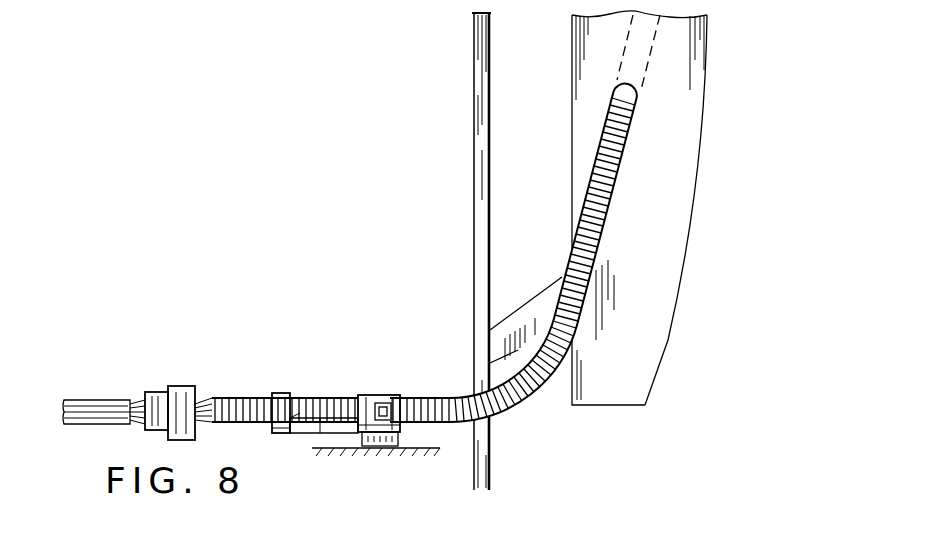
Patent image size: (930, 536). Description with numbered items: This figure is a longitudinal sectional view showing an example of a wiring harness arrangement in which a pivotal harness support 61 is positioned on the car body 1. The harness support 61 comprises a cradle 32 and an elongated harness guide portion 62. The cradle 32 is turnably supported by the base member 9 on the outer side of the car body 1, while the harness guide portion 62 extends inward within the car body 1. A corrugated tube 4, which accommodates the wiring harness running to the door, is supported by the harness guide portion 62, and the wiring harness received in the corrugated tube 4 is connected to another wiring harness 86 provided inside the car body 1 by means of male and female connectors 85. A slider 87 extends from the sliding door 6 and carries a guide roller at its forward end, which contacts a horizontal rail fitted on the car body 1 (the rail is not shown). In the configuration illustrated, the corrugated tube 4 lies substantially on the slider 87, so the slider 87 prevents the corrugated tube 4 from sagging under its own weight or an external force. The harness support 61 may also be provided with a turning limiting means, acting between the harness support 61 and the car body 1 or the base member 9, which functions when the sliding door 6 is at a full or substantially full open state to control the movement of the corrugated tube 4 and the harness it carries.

The car body 1 is at (490, 116).
The corrugated tube 4 is at (515, 396).
The sliding door 6 is at (683, 158).
The base member 9 is at (400, 441).
The cradle 32 is at (388, 395).
The harness support 61 is at (365, 394).
The harness guide portion 62 is at (328, 437).
The male and female connectors 85 is at (185, 390).
The wiring harness 86 is at (100, 408).
The slider 87 is at (530, 300).